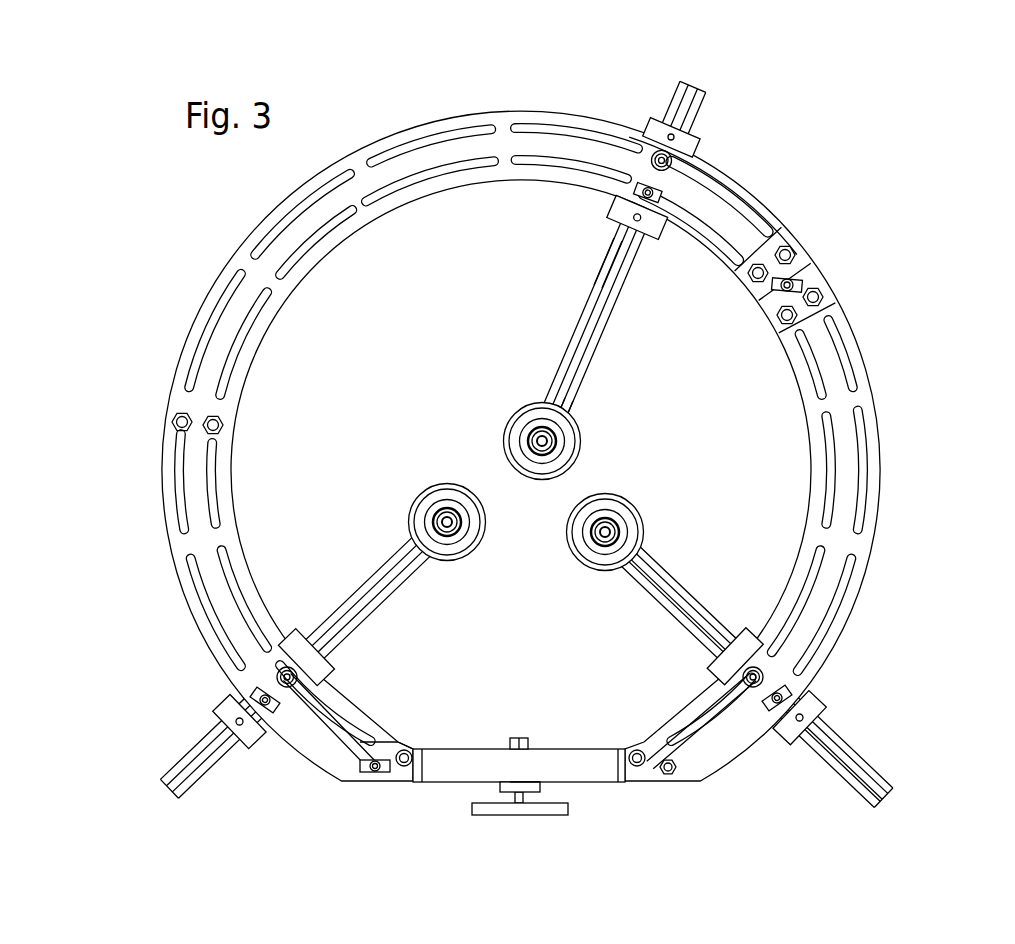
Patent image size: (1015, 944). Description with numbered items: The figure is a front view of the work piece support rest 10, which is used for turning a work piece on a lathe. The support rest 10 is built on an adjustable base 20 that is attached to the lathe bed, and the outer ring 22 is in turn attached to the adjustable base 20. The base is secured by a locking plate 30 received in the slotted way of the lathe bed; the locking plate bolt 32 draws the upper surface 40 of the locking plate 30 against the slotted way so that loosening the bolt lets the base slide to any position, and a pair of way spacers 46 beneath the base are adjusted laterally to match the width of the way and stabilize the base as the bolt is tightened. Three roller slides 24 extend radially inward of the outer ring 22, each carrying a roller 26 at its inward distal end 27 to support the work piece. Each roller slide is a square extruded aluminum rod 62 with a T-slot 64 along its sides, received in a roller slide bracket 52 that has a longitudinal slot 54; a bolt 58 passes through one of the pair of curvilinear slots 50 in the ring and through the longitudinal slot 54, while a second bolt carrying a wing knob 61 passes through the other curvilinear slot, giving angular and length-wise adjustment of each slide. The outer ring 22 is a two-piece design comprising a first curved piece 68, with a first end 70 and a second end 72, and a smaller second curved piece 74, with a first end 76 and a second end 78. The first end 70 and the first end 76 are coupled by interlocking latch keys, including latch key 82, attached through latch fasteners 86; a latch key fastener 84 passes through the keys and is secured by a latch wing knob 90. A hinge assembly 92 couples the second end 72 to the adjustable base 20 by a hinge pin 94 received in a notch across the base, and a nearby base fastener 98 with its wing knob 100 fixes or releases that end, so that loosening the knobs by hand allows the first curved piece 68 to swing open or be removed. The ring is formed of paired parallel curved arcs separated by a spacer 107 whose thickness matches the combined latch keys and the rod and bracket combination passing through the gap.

The support rest 10 is at (896, 284).
The adjustable base 20 is at (448, 777).
The outer ring 22 is at (262, 262).
The roller slides 24 is at (600, 315).
The roller 26 is at (583, 442).
The inward distal end 27 is at (577, 396).
The locking plate 30 is at (562, 808).
The locking plate bolt 32 is at (525, 740).
The upper surface 40 is at (500, 790).
The way spacers 46 is at (540, 784).
The curvilinear slots 50 is at (740, 212).
The roller slide bracket 52 is at (652, 136).
The longitudinal slot 54 is at (700, 145).
The bolt 58 is at (650, 152).
The wing knob 61 is at (633, 205).
The rod 62 is at (628, 280).
The T-slot 64 is at (703, 97).
The first curved piece 68 is at (330, 198).
The first end 70 is at (795, 232).
The second end 72 is at (330, 737).
The second curved piece 74 is at (852, 480).
The first end 76 is at (830, 315).
The second end 78 is at (690, 755).
The latch key 82 is at (800, 275).
The latch key fastener 84 is at (757, 283).
The latch fasteners 86 is at (790, 318).
The latch wing knob 90 is at (773, 273).
The hinge assembly 92 is at (414, 714).
The hinge pin 94 is at (405, 783).
The base fastener 98 is at (366, 770).
The wing knob 100 is at (364, 752).
The spacer 107 is at (182, 430).